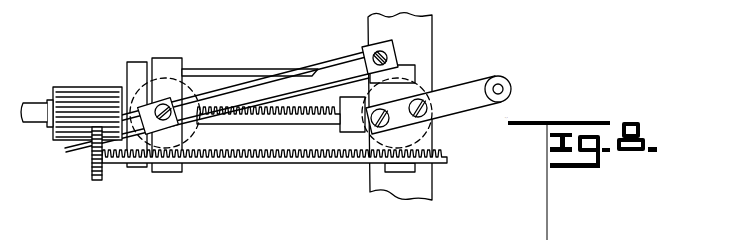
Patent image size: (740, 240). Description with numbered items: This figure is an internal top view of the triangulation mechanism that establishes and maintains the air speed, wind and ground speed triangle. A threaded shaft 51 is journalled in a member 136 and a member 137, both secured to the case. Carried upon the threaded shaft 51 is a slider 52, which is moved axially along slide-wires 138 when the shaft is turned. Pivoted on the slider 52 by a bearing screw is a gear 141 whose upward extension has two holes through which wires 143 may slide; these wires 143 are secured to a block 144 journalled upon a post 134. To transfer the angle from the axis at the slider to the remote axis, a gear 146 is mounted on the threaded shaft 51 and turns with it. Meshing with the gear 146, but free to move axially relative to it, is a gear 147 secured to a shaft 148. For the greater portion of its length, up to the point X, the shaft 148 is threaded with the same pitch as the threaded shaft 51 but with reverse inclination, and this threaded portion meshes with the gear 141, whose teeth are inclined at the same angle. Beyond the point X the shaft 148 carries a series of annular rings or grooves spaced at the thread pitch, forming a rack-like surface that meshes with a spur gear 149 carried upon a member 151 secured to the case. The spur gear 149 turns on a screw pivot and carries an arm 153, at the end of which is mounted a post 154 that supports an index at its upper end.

The gear 146 is at (76, 74).
The member 136 is at (142, 48).
The slider 52 is at (176, 48).
The slide-wires 138 is at (236, 56).
The wires 143 is at (231, 102).
The gear 141 is at (192, 128).
The threaded shaft 51 is at (243, 124).
The member 137 is at (340, 135).
The post 134 is at (373, 46).
The block 144 is at (395, 50).
The member 151 is at (435, 54).
The arm 153 is at (470, 76).
The post 154 is at (511, 88).
The spur gear 149 is at (433, 124).
The shaft 148 is at (222, 165).
The gear 147 is at (97, 184).
The point X is at (371, 165).